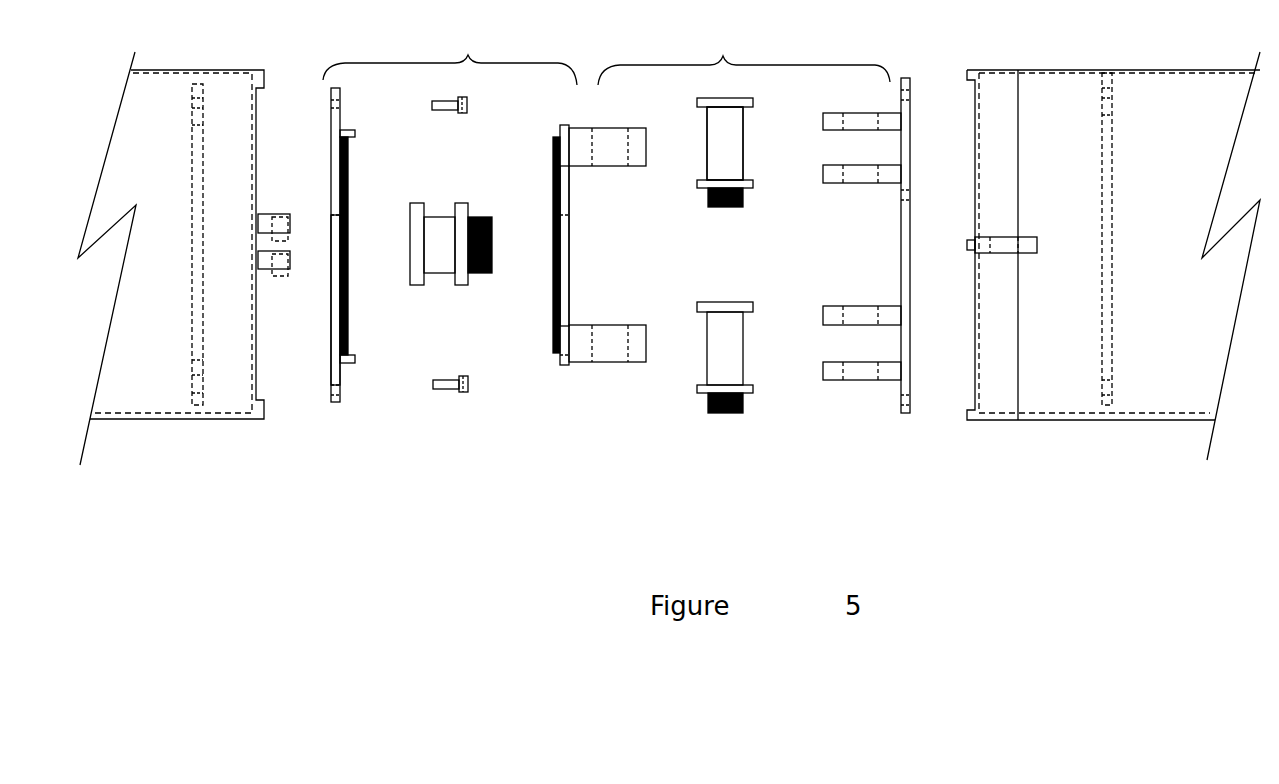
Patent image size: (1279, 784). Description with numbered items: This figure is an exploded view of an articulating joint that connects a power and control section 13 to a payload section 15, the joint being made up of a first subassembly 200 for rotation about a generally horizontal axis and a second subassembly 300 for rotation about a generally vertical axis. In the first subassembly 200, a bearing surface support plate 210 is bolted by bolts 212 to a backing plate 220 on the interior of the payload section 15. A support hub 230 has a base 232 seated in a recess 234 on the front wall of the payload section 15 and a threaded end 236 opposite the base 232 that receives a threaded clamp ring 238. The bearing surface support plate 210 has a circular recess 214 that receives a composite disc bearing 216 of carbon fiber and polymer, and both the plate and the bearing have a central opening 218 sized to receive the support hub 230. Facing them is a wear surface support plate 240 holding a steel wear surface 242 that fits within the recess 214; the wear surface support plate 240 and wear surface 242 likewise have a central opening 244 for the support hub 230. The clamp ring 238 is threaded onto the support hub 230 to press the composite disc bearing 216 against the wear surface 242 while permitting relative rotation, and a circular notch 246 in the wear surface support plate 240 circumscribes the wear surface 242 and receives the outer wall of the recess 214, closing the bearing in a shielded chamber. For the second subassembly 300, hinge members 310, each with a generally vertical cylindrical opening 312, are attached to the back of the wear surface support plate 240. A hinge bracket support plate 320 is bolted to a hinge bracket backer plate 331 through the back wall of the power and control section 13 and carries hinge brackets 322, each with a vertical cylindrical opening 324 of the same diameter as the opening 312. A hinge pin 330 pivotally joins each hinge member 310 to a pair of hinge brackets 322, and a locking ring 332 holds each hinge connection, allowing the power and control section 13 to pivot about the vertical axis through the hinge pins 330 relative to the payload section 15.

The power and control section 13 is at (1195, 382).
The payload section 15 is at (158, 387).
The first subassembly 200 is at (450, 53).
The bearing surface support plate 210 is at (345, 128).
The bolts 212 is at (445, 112).
The circular recess 214 is at (362, 360).
The composite disc bearing 216 is at (350, 175).
The central opening 218 is at (335, 262).
The backing plate 220 is at (190, 222).
The support hub 230 is at (445, 290).
The base 232 is at (414, 266).
The recess 234 is at (256, 262).
The threaded end 236 is at (492, 270).
The threaded clamp ring 238 is at (465, 212).
The wear surface support plate 240 is at (572, 128).
The wear surface 242 is at (553, 354).
The central opening 244 is at (570, 236).
The circular notch 246 is at (557, 132).
The second subassembly 300 is at (744, 53).
The hinge members 310 is at (642, 180).
The cylindrical opening 312 is at (605, 172).
The hinge bracket support plate 320 is at (905, 78).
The hinge brackets 322 is at (828, 185).
The cylindrical opening 324 is at (860, 185).
The hinge pin 330 is at (745, 127).
The hinge bracket backer plate 331 is at (1115, 135).
The locking ring 332 is at (750, 190).